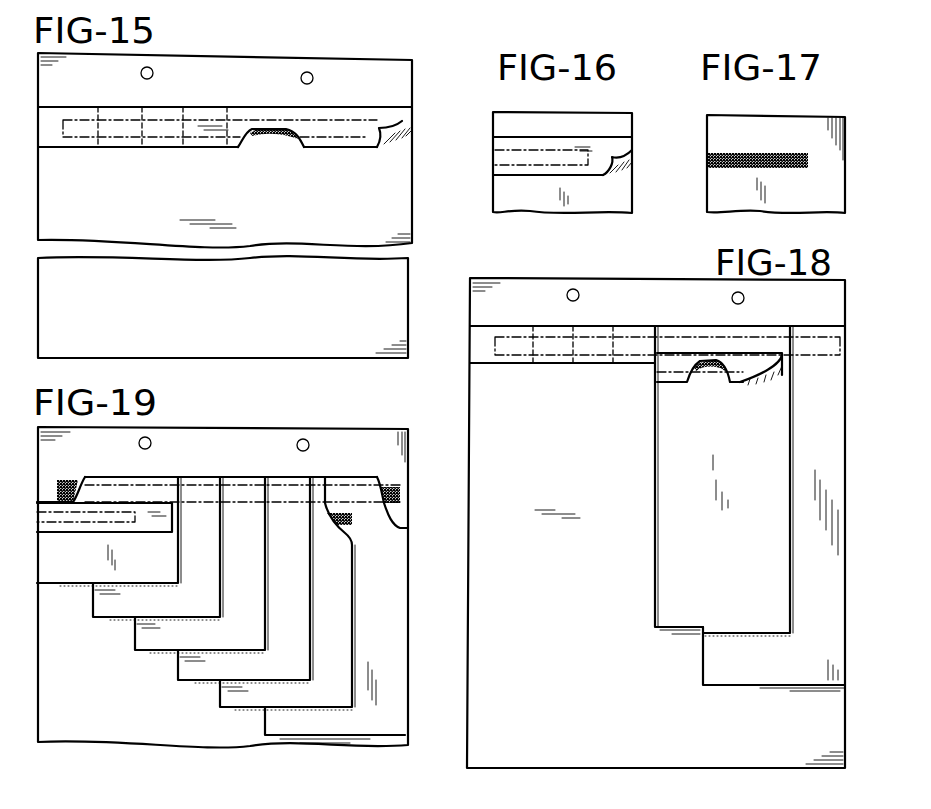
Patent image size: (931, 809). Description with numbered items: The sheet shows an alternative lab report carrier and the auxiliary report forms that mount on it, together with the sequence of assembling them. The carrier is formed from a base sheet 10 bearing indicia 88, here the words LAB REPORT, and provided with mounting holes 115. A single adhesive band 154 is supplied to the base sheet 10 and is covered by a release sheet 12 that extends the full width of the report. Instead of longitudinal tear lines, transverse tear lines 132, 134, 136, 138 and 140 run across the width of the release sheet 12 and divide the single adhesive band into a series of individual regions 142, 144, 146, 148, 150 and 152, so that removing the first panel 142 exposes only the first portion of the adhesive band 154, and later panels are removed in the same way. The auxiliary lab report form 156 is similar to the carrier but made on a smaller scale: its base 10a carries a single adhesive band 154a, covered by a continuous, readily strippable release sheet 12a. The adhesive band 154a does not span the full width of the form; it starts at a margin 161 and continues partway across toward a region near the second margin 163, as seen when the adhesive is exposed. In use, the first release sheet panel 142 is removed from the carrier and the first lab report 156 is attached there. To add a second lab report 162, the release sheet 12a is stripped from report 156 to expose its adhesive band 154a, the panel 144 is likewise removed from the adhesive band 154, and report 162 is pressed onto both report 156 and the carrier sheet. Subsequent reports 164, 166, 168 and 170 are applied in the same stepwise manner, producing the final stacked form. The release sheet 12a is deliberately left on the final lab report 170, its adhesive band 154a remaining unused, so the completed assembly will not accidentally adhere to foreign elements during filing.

In FIG. 15, the base sheet 10 is at (355, 68).
In FIG. 18, the base sheet 10 is at (712, 760).
In FIG. 19, the base sheet 10 is at (370, 433).
In FIG. 16, the base 10a is at (583, 207).
In FIG. 17, the base 10a is at (777, 203).
In FIG. 15, the release sheet 12 is at (338, 107).
In FIG. 18, the release sheet 12 is at (483, 363).
In FIG. 16, the release sheet 12a is at (508, 175).
In FIG. 18, the release sheet 12a is at (737, 380).
In FIG. 19, the release sheet 12a is at (137, 530).
In FIG. 15, the indicia 88 is at (197, 88).
In FIG. 18, the indicia 88 is at (667, 303).
In FIG. 19, the indicia 88 is at (260, 457).
In FIG. 15, the mounting holes 115 is at (153, 68).
In FIG. 18, the mounting holes 115 is at (577, 289).
In FIG. 19, the mounting holes 115 is at (150, 438).
In FIG. 15, the transverse tear line 132 is at (258, 118).
In FIG. 15, the transverse tear line 134 is at (238, 148).
In FIG. 15, the transverse tear line 136 is at (177, 143).
In FIG. 18, the transverse tear line 136 is at (612, 358).
In FIG. 15, the transverse tear line 138 is at (145, 143).
In FIG. 18, the transverse tear line 138 is at (573, 357).
In FIG. 15, the transverse tear line 140 is at (102, 142).
In FIG. 18, the transverse tear line 140 is at (547, 300).
In FIG. 15, the release sheet panel 142 is at (353, 145).
In FIG. 15, the release sheet panel 144 is at (287, 78).
In FIG. 15, the release sheet panel 146 is at (230, 147).
In FIG. 18, the release sheet panel 146 is at (627, 358).
In FIG. 15, the release sheet panel 148 is at (162, 143).
In FIG. 18, the release sheet panel 148 is at (590, 360).
In FIG. 15, the release sheet panel 150 is at (132, 110).
In FIG. 18, the release sheet panel 150 is at (545, 330).
In FIG. 15, the release sheet panel 152 is at (90, 110).
In FIG. 18, the release sheet panel 152 is at (517, 330).
In FIG. 15, the adhesive band 154 is at (284, 136).
In FIG. 18, the adhesive band 154 is at (825, 347).
In FIG. 19, the adhesive band 154 is at (85, 477).
In FIG. 16, the adhesive band 154a is at (522, 153).
In FIG. 17, the adhesive band 154a is at (793, 153).
In FIG. 18, the adhesive band 154a is at (723, 372).
In FIG. 19, the adhesive band 154a is at (117, 533).
In FIG. 16, the lab report form 156 is at (531, 217).
In FIG. 17, the lab report form 156 is at (703, 185).
In FIG. 18, the lab report form 156 is at (710, 660).
In FIG. 19, the lab report form 156 is at (273, 720).
In FIG. 16, the margin 161 is at (493, 170).
In FIG. 17, the margin 161 is at (707, 137).
In FIG. 18, the second lab report 162 is at (667, 552).
In FIG. 19, the second lab report 162 is at (220, 690).
In FIG. 16, the second margin 163 is at (632, 173).
In FIG. 17, the second margin 163 is at (863, 105).
In FIG. 19, the lab report 164 is at (182, 668).
In FIG. 19, the lab report 166 is at (148, 642).
In FIG. 19, the lab report 168 is at (112, 602).
In FIG. 19, the final lab report 170 is at (90, 573).